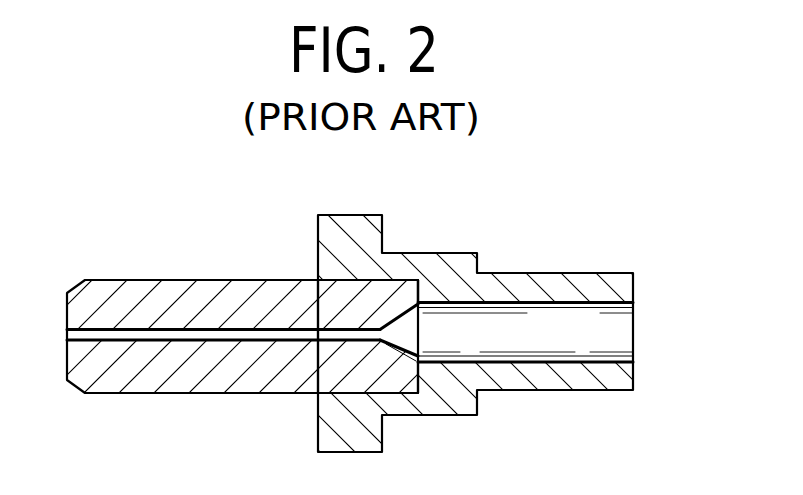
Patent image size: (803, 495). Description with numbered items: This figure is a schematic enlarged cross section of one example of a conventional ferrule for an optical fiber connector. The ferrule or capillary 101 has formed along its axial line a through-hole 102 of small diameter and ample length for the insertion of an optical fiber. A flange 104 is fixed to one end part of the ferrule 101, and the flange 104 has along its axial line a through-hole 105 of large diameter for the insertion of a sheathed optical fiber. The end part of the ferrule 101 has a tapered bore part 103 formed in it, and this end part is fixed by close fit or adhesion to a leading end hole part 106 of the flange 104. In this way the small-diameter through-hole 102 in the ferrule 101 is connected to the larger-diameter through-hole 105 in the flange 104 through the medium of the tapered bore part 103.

The ferrule 101 is at (215, 278).
The through-hole 102 is at (183, 343).
The tapered bore part 103 is at (407, 358).
The flange 104 is at (460, 252).
The through-hole 105 is at (552, 300).
The leading end hole part 106 is at (387, 280).